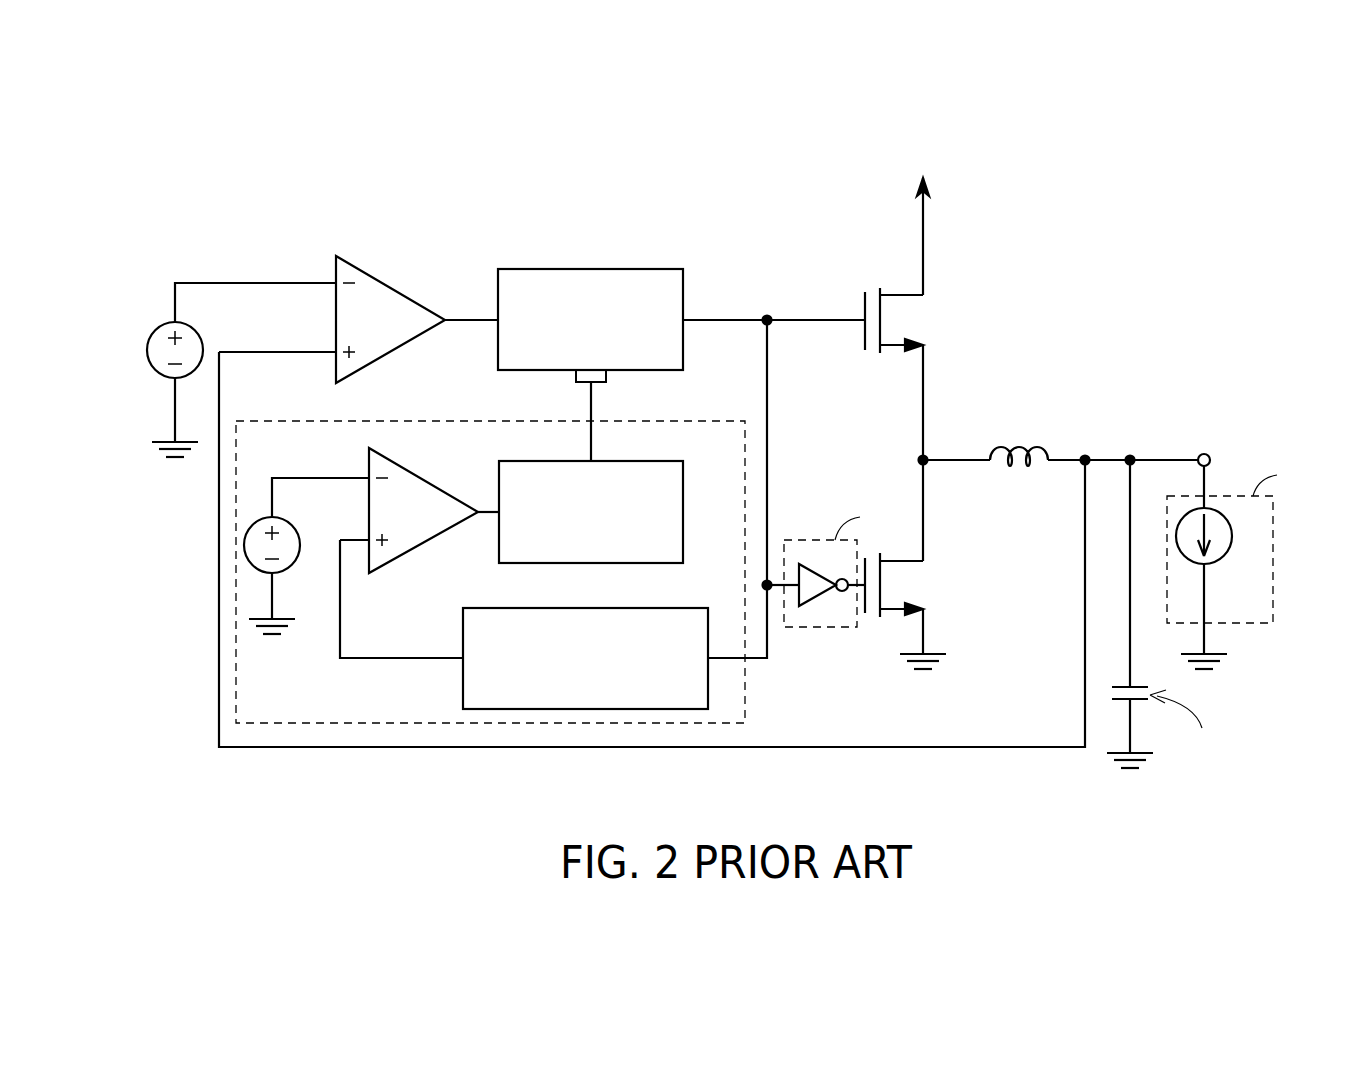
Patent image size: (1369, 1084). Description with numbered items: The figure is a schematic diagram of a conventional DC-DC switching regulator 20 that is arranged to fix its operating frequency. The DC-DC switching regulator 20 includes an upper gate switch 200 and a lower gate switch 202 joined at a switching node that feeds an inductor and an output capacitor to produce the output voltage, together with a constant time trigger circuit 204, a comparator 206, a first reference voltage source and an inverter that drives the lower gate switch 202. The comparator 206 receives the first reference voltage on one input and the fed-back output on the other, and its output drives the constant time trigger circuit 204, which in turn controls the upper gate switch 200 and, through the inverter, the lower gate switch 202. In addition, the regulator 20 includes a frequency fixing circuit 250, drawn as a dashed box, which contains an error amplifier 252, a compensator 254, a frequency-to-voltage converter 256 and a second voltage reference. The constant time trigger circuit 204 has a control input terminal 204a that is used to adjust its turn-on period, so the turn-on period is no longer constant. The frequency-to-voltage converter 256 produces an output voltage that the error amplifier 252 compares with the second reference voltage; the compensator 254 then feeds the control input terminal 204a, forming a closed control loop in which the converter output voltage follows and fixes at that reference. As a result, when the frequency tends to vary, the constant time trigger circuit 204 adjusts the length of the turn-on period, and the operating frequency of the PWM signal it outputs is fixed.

The DC-DC switching regulator 20 is at (1102, 262).
The upper gate switch 200 is at (923, 318).
The lower gate switch 202 is at (923, 577).
The constant time trigger circuit 204 is at (653, 267).
The control input terminal 204a is at (601, 383).
The comparator 206 is at (392, 283).
The frequency fixing circuit 250 is at (693, 421).
The error amplifier 252 is at (427, 475).
The compensator 254 is at (653, 460).
The frequency-to-voltage converter 256 is at (653, 608).